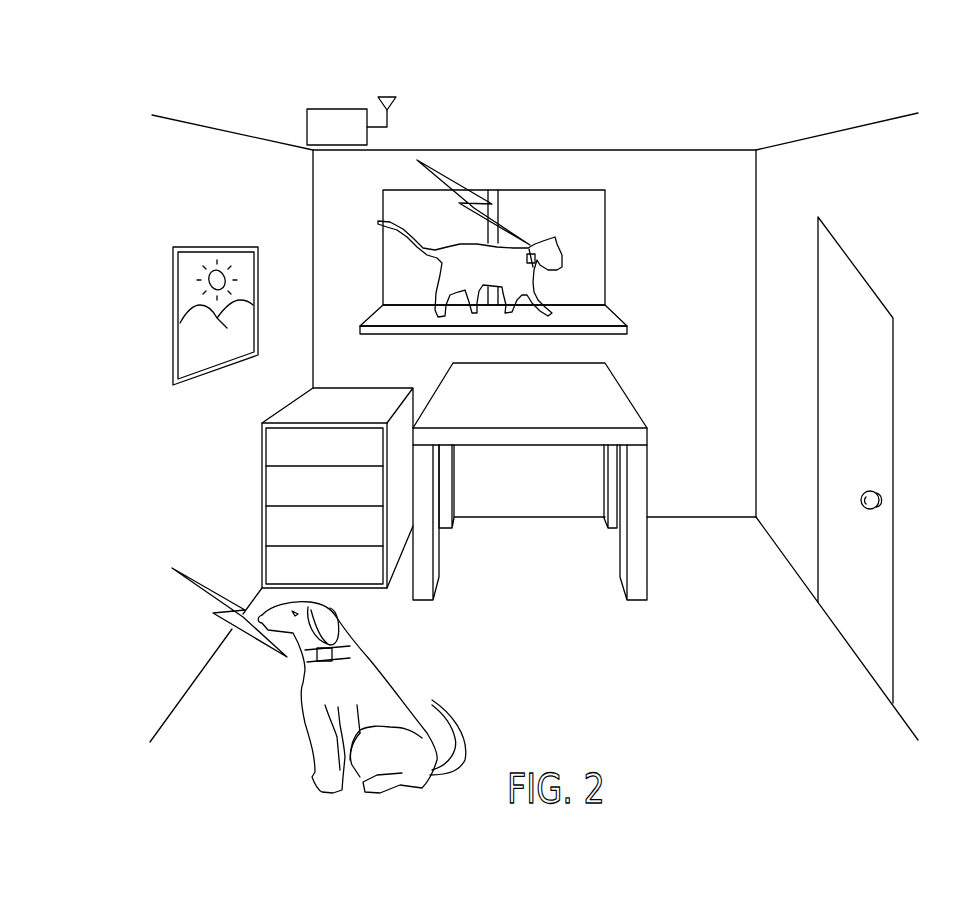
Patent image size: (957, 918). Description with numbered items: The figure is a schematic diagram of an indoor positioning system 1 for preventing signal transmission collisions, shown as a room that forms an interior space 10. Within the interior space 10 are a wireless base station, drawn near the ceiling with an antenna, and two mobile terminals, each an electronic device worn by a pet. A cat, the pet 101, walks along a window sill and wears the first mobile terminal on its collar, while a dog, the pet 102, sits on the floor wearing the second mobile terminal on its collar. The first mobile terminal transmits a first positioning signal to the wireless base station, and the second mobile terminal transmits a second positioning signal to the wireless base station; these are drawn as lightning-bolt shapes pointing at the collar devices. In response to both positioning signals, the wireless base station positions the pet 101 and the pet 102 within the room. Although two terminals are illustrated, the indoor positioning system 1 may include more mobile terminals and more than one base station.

The indoor positioning system 1 is at (500, 129).
The interior space 10 is at (708, 88).
The pet 101 is at (460, 274).
The pet 102 is at (393, 696).